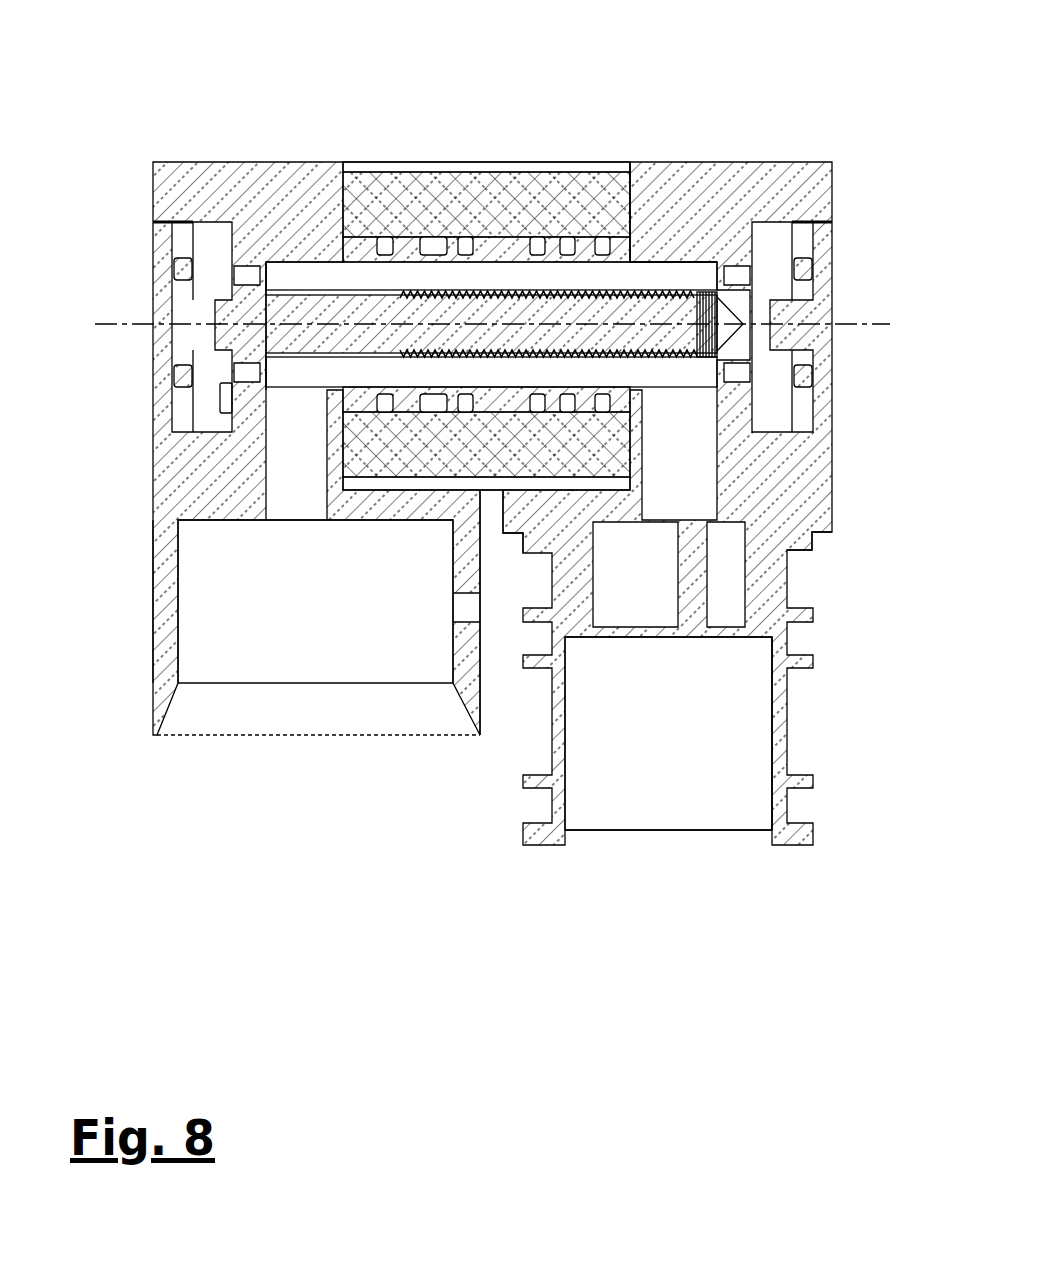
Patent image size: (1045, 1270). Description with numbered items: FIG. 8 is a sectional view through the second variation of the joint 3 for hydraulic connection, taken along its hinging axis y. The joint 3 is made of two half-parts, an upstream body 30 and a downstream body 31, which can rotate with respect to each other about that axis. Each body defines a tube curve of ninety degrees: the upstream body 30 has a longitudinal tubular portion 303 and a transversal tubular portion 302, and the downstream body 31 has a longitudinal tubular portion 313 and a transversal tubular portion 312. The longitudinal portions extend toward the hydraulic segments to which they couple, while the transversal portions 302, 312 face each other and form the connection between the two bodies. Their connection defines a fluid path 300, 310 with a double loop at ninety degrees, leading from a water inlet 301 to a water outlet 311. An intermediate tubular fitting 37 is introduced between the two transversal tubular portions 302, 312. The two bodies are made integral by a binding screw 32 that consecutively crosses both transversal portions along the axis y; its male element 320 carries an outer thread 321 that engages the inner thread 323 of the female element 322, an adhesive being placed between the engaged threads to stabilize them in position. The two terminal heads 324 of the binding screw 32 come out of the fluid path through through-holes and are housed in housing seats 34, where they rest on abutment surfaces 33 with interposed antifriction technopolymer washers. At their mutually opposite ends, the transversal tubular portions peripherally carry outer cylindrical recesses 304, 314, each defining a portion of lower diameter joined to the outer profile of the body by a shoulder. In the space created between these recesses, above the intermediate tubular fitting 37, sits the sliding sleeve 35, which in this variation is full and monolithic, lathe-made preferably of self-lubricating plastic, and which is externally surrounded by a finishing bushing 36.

The joint for hydraulic connection 3 is at (486, 478).
The upstream body 30 is at (163, 520).
The downstream body 31 is at (783, 537).
The binding screw 32 is at (133, 238).
The abutment surfaces 33 is at (222, 400).
The housing seats 34 is at (203, 420).
The sliding sleeve 35 is at (487, 205).
The finishing bushing 36 is at (532, 168).
The intermediate tubular fitting 37 is at (485, 377).
The fluid path 300 is at (315, 601).
The water inlet 301 is at (237, 720).
The transversal tubular portion 302 is at (293, 310).
The longitudinal tubular portion 303 is at (163, 643).
The outer cylindrical recess 304 is at (402, 293).
The fluid path 310 is at (668, 733).
The water outlet 311 is at (650, 833).
The transversal tubular portion 312 is at (683, 223).
The longitudinal tubular portion 313 is at (753, 587).
The recess 314 is at (577, 240).
The male element 320 is at (253, 207).
The outer thread 321 is at (323, 227).
The female element 322 is at (627, 287).
The inner thread 323 is at (708, 360).
The terminal heads 324 is at (205, 258).